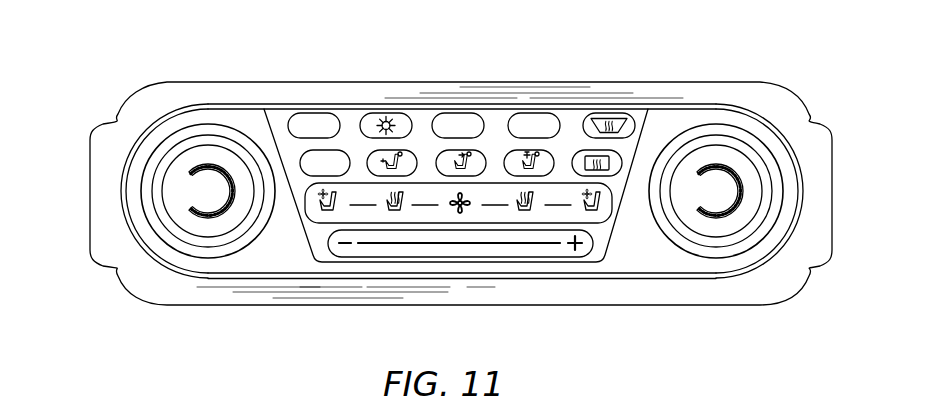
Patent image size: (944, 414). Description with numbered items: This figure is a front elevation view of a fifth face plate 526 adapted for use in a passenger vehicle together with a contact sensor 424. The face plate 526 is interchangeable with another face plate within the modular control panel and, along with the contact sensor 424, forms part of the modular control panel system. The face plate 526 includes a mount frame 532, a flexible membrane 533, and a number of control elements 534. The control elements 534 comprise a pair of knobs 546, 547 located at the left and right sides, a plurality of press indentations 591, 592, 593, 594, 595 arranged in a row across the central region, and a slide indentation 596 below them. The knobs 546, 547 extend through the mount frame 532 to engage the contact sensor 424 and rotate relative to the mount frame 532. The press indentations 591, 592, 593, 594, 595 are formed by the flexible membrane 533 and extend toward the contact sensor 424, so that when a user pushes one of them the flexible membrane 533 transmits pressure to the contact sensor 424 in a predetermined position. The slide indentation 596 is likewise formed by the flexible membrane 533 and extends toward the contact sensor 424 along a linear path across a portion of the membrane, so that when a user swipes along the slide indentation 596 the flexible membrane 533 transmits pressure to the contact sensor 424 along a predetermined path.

The fifth face plate 526 is at (105, 65).
The contact sensor 424 is at (137, 82).
The mount frame 532 is at (783, 100).
The flexible membrane 533 is at (596, 233).
The control elements 534 is at (671, 88).
The knob 546 is at (192, 248).
The knob 547 is at (723, 252).
The press indentation 591 is at (337, 123).
The press indentation 592 is at (408, 123).
The press indentation 593 is at (480, 123).
The press indentation 594 is at (553, 123).
The press indentation 595 is at (628, 119).
The slide indentation 596 is at (470, 250).